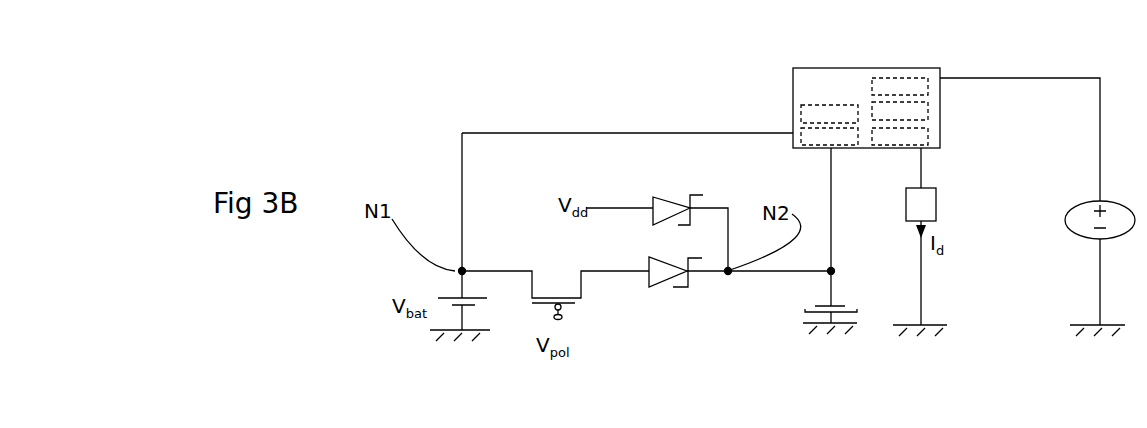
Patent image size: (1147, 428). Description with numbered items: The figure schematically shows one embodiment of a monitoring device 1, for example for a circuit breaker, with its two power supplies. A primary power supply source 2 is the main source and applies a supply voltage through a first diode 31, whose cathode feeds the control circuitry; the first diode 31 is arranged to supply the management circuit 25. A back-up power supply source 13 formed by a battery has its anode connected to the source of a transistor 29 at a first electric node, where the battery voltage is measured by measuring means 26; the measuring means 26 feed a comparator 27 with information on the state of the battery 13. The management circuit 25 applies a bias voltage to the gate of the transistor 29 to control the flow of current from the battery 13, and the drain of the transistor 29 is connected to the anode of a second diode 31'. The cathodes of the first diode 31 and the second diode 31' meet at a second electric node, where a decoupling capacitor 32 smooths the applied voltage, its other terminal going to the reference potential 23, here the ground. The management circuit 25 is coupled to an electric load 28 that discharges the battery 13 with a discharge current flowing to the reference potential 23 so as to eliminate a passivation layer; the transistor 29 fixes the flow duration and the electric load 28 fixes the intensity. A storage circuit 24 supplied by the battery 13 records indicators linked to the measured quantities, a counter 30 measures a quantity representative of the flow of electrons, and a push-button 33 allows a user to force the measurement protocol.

The monitoring device 1 is at (420, 156).
The primary power supply source 2 is at (1113, 237).
The back-up power supply source 13 is at (446, 298).
The reference potential 23 is at (450, 329).
The storage circuit 24 is at (806, 128).
The management circuit 25 is at (847, 105).
The measuring means 26 is at (912, 78).
The comparator 27 is at (908, 102).
The electric load 28 is at (936, 205).
The transistor 29 is at (577, 304).
The counter 30 is at (928, 138).
The first diode 31 is at (653, 165).
The second diode 31' is at (686, 313).
The decoupling capacitor 32 is at (857, 309).
The push-button 33 is at (816, 60).